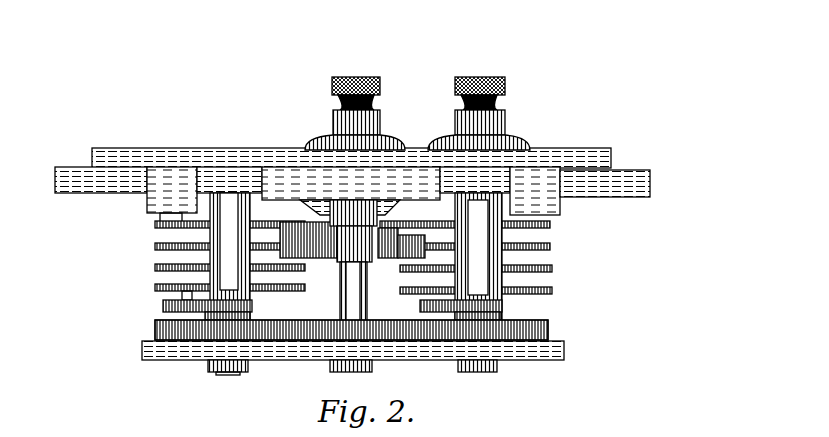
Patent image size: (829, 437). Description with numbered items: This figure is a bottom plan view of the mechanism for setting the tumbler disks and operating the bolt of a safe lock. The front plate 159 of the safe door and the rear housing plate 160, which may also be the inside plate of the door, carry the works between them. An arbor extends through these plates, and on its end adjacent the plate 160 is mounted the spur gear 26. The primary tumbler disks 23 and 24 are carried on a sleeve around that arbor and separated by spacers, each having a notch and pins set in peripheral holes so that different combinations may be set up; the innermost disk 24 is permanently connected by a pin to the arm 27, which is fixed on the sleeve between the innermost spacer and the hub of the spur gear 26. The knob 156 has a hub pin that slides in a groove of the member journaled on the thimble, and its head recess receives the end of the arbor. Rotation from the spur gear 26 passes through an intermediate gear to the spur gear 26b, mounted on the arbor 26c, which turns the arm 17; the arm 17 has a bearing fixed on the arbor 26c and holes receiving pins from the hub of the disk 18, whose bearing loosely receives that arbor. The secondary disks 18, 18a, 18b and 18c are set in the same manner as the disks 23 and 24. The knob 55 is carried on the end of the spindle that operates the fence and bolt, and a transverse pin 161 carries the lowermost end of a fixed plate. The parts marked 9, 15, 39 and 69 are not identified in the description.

The frame member 9 is at (650, 185).
The knob base 15 is at (312, 143).
The arm 17 is at (163, 306).
The disk 18 is at (155, 287).
The disk 18a is at (155, 267).
The disk 18b is at (155, 246).
The disk 18c is at (155, 224).
The inner disks 23 is at (553, 269).
The disks 24 is at (553, 291).
The spur gear 26 is at (548, 336).
The spur gear 26b is at (152, 328).
The arbor 26c is at (236, 374).
The arm 27 is at (502, 307).
The knob base 39 is at (528, 147).
The knob 55 is at (357, 77).
The pawl 69 is at (182, 295).
The knob 156 is at (482, 77).
The front plate 159 is at (613, 160).
The rear housing plate 160 is at (565, 353).
The transverse pin 161 is at (346, 372).